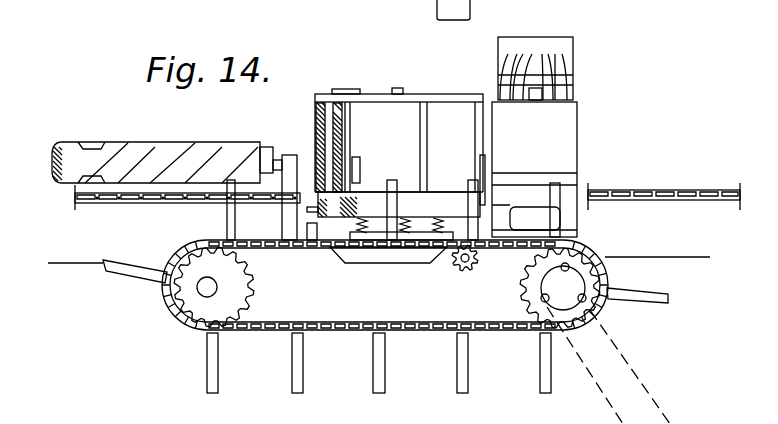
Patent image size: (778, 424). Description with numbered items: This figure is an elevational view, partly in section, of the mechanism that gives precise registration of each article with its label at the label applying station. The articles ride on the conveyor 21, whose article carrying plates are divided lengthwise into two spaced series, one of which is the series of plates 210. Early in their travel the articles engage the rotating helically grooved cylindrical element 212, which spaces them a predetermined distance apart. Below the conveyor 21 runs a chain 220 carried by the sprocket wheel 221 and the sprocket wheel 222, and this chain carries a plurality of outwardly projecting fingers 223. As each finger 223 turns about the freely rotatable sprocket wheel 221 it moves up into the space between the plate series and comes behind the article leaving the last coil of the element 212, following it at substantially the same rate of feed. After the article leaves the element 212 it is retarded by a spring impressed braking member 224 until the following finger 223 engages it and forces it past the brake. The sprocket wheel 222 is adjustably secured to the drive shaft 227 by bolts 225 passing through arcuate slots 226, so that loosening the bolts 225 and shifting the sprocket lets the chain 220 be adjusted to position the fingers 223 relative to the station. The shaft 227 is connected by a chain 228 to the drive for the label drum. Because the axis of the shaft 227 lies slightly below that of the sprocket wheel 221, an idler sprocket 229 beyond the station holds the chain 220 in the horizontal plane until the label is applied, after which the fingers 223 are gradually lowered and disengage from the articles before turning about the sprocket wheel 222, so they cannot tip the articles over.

The conveyor 21 is at (70, 200).
The series of article supporting plates 210 is at (118, 204).
The helically grooved cylindrical element 212 is at (130, 147).
The chain 220 is at (338, 335).
The sprocket wheel 221 is at (247, 284).
The sprocket wheel 222 is at (531, 283).
The fingers 223 is at (228, 219).
The braking member 224 is at (358, 157).
The bolts 225 is at (568, 269).
The arcuate slots 226 is at (572, 274).
The drive shaft 227 is at (584, 279).
The chain 228 is at (625, 359).
The idler sprocket 229 is at (460, 271).